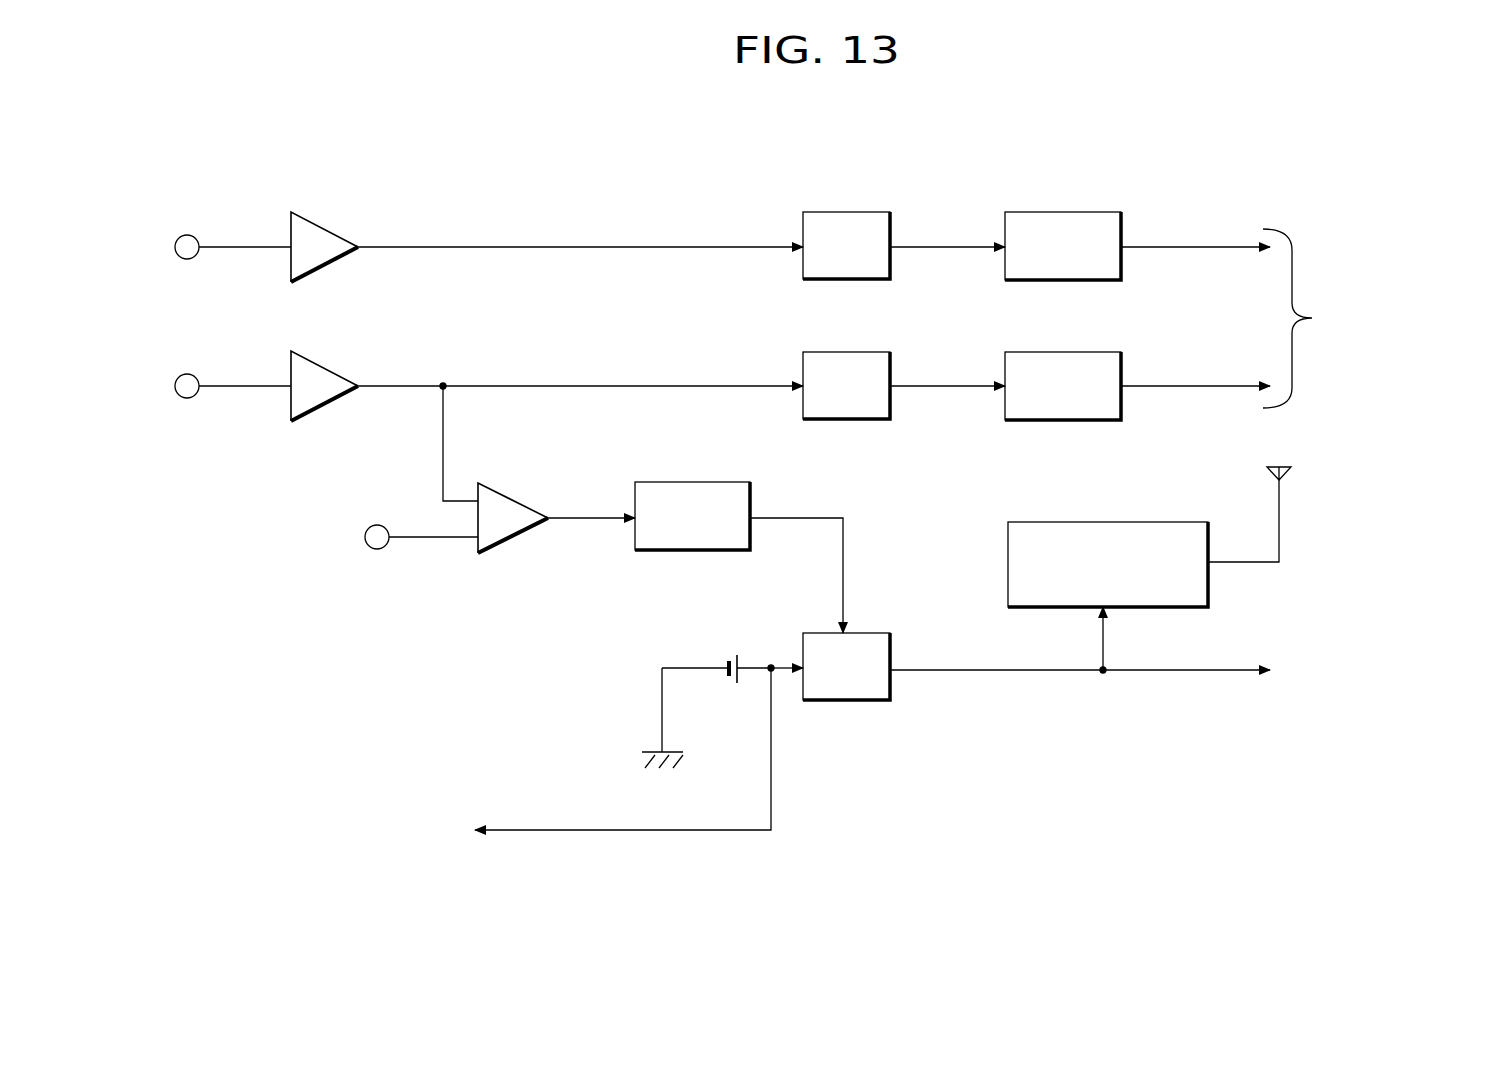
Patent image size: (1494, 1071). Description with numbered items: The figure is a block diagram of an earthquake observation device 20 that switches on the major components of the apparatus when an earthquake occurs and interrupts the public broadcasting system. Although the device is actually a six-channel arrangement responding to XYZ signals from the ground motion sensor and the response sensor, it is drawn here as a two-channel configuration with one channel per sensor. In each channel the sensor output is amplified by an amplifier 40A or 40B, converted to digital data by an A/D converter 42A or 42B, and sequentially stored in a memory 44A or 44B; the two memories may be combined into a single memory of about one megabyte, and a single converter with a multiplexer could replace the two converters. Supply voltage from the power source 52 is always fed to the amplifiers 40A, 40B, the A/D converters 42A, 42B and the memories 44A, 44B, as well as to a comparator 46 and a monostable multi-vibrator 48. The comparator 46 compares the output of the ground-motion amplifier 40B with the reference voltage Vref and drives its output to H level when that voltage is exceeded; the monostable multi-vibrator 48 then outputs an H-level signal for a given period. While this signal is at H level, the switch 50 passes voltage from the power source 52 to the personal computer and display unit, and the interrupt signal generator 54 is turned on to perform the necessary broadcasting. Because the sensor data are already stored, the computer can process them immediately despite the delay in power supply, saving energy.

The earthquake observation device 20 is at (236, 129).
The amplifier 40A is at (318, 222).
The amplifier 40B is at (318, 361).
The A/D converter 42A is at (833, 212).
The A/D converter 42B is at (833, 352).
The memory 44A is at (1040, 212).
The memory 44B is at (1040, 352).
The comparator 46 is at (510, 496).
The monostable multi-vibrator (MSMV) 48 is at (680, 482).
The switch 50 is at (840, 703).
The power source 52 is at (728, 683).
The interrupt signal generator 54 is at (1090, 522).